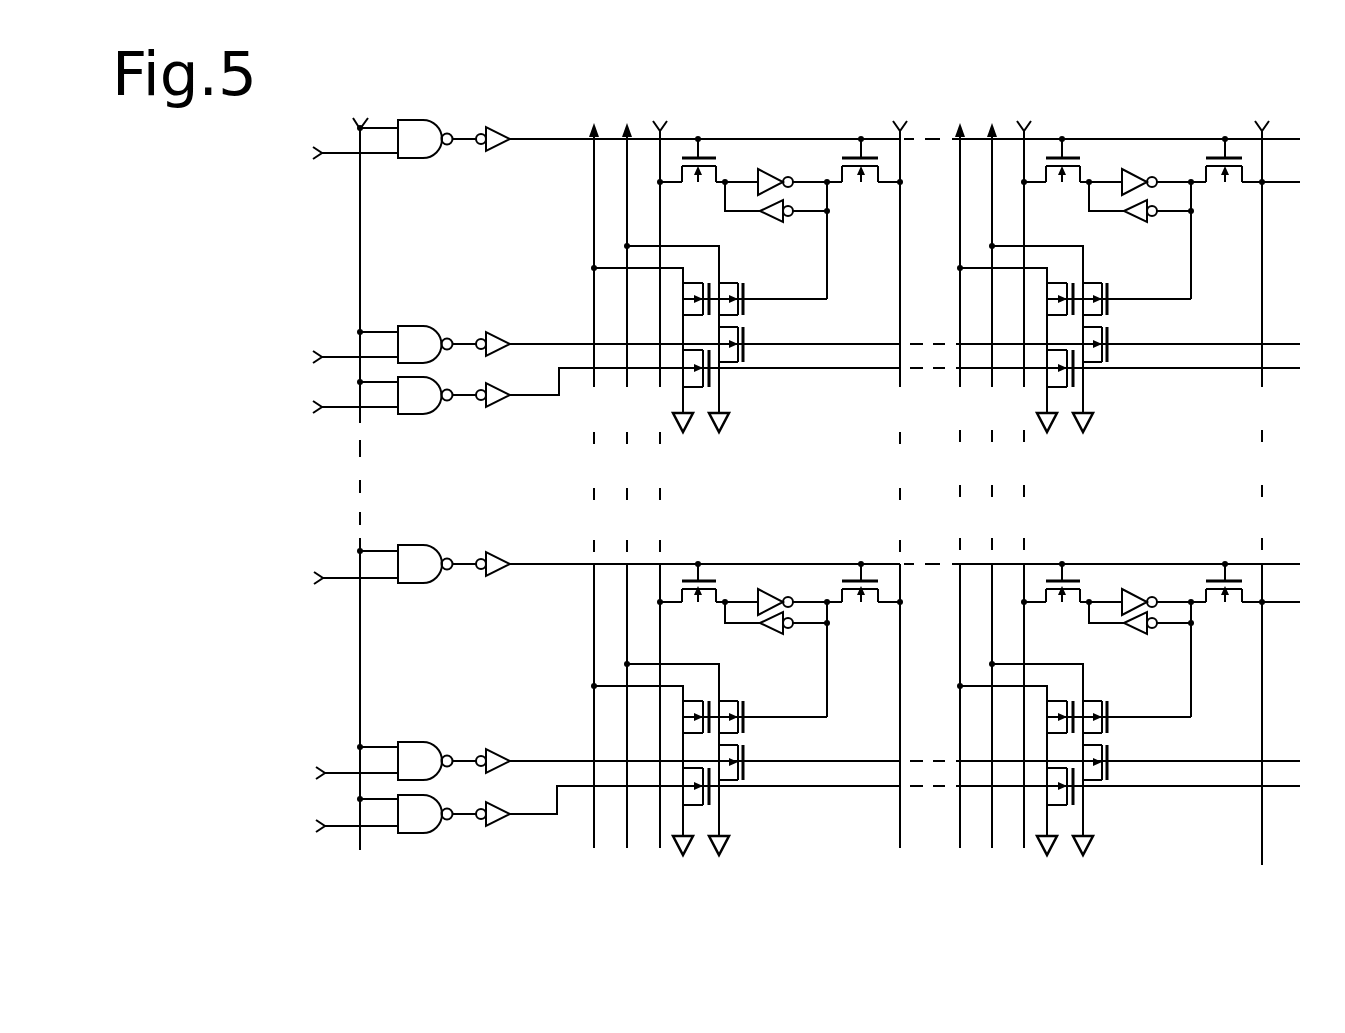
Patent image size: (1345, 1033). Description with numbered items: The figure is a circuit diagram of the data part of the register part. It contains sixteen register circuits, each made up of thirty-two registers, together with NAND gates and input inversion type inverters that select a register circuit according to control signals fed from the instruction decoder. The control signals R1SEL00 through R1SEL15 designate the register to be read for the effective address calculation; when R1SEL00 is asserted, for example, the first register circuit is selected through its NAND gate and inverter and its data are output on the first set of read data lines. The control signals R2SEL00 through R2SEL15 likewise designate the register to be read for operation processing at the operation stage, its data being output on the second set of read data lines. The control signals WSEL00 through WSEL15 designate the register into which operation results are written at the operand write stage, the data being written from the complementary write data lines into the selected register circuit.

The write select control signal WSEL00 is at (293, 151).
The second read select control signal R2SEL00 is at (293, 360).
The first read select control signal R1SEL00 is at (293, 408).
The write select control signal WSEL15 is at (294, 581).
The second read select control signal R2SEL15 is at (293, 772).
The first read select control signal R1SEL15 is at (292, 829).